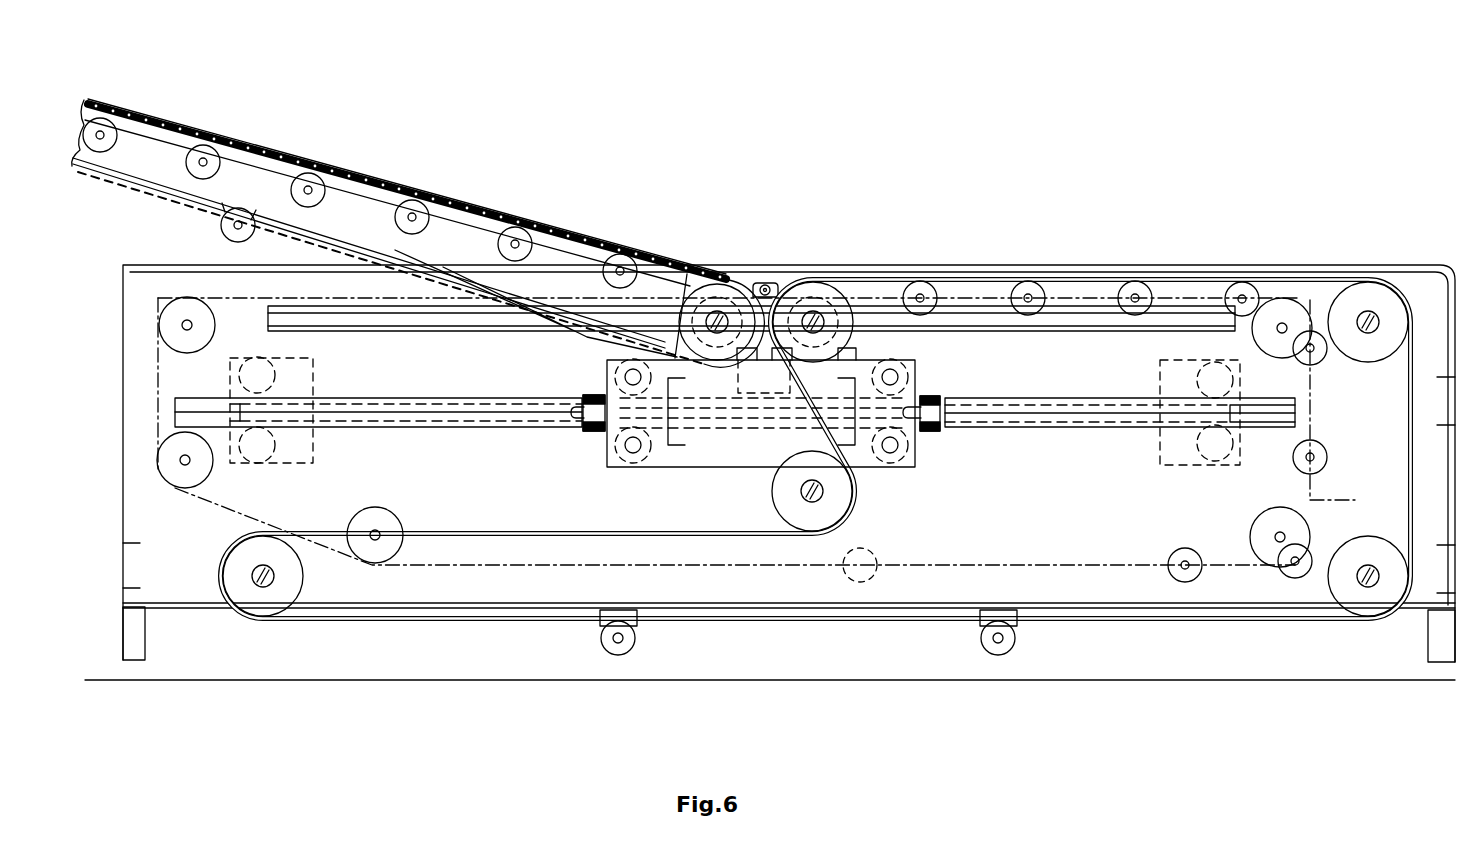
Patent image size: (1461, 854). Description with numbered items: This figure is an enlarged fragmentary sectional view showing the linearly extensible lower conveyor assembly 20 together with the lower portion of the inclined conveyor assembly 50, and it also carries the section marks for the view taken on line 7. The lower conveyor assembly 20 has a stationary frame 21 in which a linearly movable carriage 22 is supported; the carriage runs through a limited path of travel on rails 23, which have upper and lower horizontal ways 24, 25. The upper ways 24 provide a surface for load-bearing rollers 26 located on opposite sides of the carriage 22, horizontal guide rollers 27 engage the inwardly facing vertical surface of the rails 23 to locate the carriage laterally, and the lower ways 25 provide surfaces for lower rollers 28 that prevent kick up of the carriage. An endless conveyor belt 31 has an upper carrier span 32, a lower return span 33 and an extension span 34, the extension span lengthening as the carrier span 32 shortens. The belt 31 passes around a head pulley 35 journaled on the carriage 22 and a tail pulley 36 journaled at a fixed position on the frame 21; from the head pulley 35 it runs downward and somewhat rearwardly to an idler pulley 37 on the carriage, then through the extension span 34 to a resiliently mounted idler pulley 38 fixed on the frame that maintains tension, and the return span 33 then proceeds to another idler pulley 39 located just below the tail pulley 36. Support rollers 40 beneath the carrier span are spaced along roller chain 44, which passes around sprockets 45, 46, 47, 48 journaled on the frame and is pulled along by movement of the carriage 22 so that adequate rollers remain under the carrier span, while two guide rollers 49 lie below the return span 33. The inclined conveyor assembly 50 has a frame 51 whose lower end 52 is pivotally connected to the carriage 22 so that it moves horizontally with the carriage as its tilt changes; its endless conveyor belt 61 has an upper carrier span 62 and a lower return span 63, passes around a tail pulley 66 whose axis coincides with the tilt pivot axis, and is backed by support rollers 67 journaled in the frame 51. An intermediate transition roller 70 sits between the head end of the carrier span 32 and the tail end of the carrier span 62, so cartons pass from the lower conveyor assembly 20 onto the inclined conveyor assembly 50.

The lower conveyor assembly 20 is at (977, 214).
The stationary frame 21 is at (115, 560).
The carriage 22 is at (668, 467).
The rails 23 is at (455, 427).
The upper horizontal ways 24 is at (440, 397).
The lower horizontal ways 25 is at (418, 430).
The load-bearing rollers 26 is at (276, 378).
The horizontal guide rollers 27 is at (580, 402).
The lower rollers 28 is at (275, 452).
The endless conveyor belt 31 is at (1425, 350).
The upper carrier span 32 is at (1153, 272).
The lower return span 33 is at (735, 625).
The extension span 34 is at (505, 530).
The head pulley 35 is at (860, 330).
The tail pulley 36 is at (1350, 288).
The idler pulley 37 is at (772, 510).
The idler pulley 38 is at (303, 590).
The idler pulley 39 is at (1330, 600).
The support rollers 40 is at (1007, 290).
The roller chain 44 is at (158, 400).
The sprocket 45 is at (172, 462).
The sprocket 46 is at (165, 325).
The sprocket 47 is at (1280, 312).
The sprocket 48 is at (388, 540).
The guide rollers 49 is at (612, 656).
The inclined conveyor assembly 50 is at (353, 108).
The frame 51 is at (100, 305).
The lower end 52 is at (683, 250).
The endless conveyor belt 61 is at (470, 195).
The upper carrier span 62 is at (262, 150).
The lower return span 63 is at (330, 236).
The tail pulley 66 is at (677, 367).
The support rollers 67 is at (395, 213).
The intermediate transition roller 70 is at (770, 284).
The section line 7- 7 is at (1085, 248).